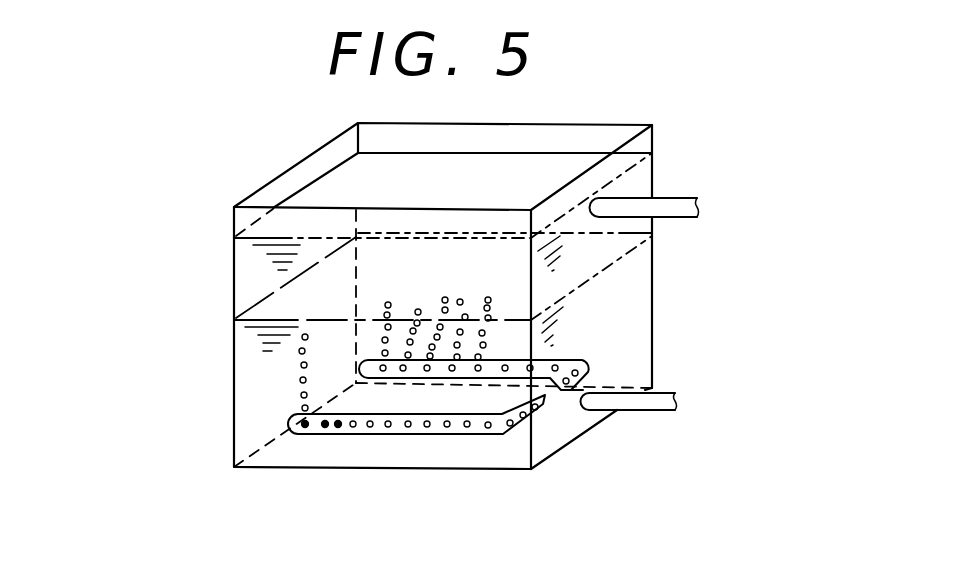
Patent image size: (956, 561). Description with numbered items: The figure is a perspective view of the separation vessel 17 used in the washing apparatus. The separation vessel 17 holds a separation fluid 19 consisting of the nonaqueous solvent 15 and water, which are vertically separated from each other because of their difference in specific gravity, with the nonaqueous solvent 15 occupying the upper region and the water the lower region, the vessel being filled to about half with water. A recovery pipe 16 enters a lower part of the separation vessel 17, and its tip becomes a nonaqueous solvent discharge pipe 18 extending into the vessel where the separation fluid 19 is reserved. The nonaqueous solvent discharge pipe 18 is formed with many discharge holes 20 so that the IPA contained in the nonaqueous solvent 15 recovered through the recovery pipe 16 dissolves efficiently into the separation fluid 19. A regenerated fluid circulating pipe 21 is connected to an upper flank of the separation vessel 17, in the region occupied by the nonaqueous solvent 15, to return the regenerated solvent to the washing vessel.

The nonaqueous solvent 15 is at (203, 205).
The recovery pipe 16 is at (627, 410).
The separation vessel 17 is at (651, 302).
The nonaqueous solvent discharge pipe 18 is at (398, 433).
The separation fluid 19 is at (203, 465).
The discharge holes 20 is at (305, 428).
The regenerated fluid circulating pipe 21 is at (672, 198).